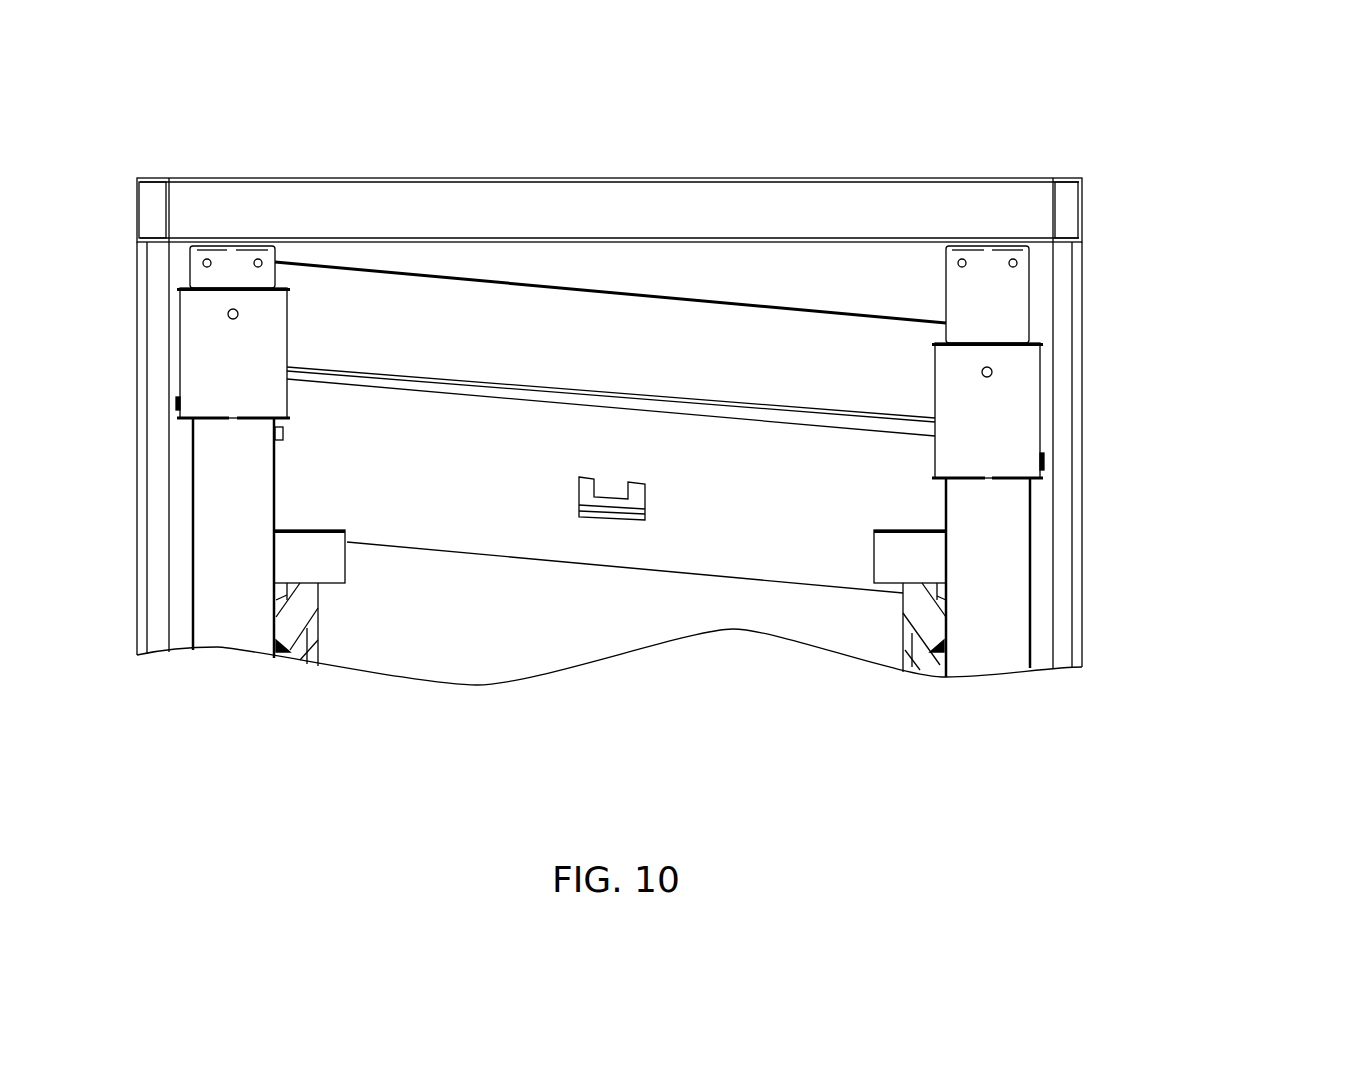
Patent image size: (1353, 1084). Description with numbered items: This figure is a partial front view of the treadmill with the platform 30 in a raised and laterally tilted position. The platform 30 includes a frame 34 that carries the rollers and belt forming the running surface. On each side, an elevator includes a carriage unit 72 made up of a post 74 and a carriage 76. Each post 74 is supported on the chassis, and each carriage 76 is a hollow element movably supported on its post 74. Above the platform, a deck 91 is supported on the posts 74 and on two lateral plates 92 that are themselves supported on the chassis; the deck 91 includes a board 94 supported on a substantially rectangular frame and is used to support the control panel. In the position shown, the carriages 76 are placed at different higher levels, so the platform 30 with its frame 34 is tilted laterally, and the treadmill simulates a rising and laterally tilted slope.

The platform 30 is at (551, 274).
The frame 34 is at (670, 384).
The carriage unit 72 is at (734, 461).
The post 74 is at (1018, 566).
The carriage 76 is at (1020, 395).
The deck 91 is at (697, 390).
The lateral plates 92 is at (661, 423).
The board 94 is at (1002, 198).